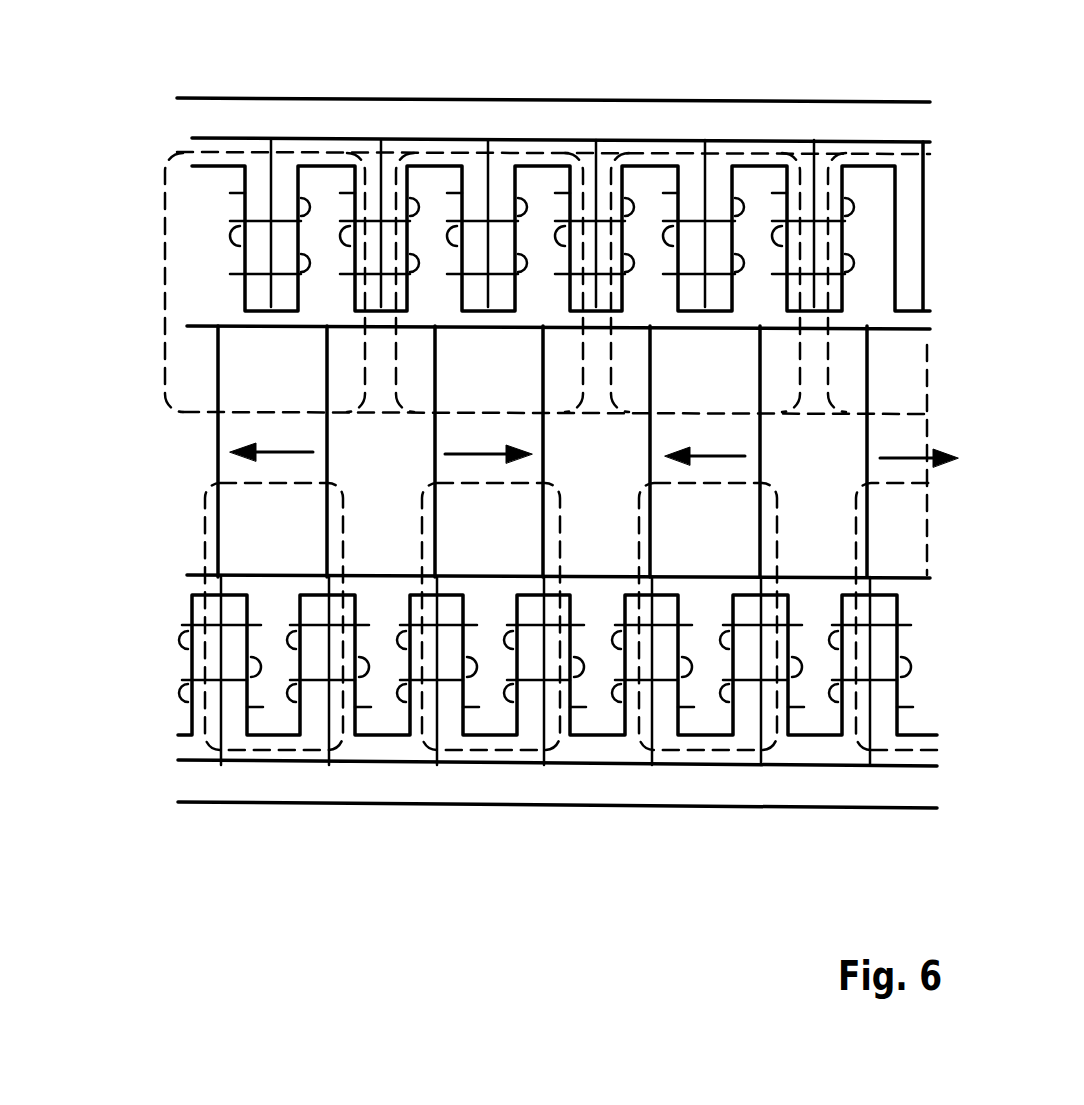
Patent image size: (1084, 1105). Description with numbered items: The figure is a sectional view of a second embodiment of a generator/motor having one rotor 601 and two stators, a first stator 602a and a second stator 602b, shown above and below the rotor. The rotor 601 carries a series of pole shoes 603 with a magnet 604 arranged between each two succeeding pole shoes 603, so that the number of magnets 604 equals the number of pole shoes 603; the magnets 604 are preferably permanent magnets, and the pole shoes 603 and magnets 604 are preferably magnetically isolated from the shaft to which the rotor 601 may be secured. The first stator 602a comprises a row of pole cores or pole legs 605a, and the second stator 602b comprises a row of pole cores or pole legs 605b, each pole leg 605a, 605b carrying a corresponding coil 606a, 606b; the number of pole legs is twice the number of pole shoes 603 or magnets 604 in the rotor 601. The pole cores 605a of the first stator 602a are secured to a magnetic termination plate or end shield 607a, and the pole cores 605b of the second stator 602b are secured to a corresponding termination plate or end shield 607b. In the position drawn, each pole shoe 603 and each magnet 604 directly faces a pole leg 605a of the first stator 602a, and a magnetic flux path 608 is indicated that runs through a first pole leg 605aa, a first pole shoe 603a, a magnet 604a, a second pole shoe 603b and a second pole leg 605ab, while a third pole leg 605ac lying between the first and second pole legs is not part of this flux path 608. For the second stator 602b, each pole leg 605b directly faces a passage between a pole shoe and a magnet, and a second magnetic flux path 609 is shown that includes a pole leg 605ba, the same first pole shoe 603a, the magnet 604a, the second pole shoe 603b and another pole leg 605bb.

The rotor 601 is at (183, 485).
The first stator 602a is at (160, 142).
The second stator 602b is at (180, 753).
The pole shoe 603 is at (808, 497).
The first pole shoe 603a is at (378, 412).
The second pole shoe 603b is at (597, 476).
The magnet 604 is at (713, 505).
The magnet 604a is at (477, 430).
The pole leg 605a is at (807, 200).
The first pole leg 605aa is at (385, 200).
The second pole leg 605ab is at (599, 210).
The third pole leg 605ac is at (479, 208).
The pole leg 605b is at (878, 702).
The pole leg 605ba is at (435, 665).
The pole leg 605bb is at (555, 665).
The coil 606a is at (820, 217).
The coil 606b is at (862, 683).
The magnetic termination plate/end shield 607a is at (230, 117).
The magnetic termination plate/end shield 607b is at (217, 787).
The magnetic flux path 608 is at (390, 346).
The magnetic flux path 609 is at (420, 537).